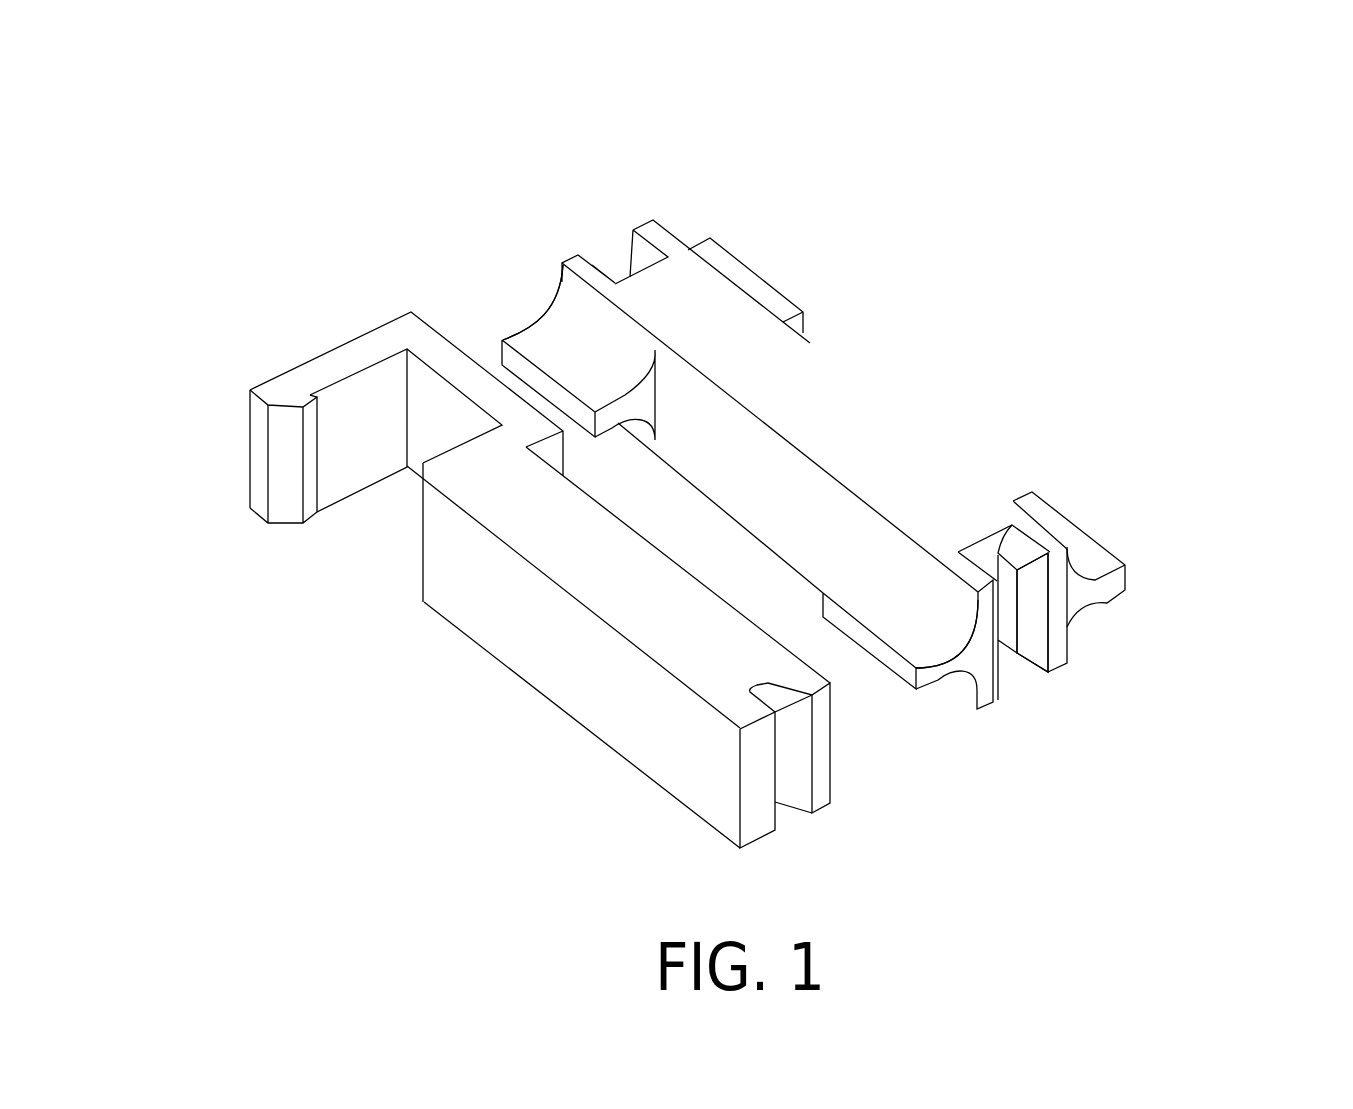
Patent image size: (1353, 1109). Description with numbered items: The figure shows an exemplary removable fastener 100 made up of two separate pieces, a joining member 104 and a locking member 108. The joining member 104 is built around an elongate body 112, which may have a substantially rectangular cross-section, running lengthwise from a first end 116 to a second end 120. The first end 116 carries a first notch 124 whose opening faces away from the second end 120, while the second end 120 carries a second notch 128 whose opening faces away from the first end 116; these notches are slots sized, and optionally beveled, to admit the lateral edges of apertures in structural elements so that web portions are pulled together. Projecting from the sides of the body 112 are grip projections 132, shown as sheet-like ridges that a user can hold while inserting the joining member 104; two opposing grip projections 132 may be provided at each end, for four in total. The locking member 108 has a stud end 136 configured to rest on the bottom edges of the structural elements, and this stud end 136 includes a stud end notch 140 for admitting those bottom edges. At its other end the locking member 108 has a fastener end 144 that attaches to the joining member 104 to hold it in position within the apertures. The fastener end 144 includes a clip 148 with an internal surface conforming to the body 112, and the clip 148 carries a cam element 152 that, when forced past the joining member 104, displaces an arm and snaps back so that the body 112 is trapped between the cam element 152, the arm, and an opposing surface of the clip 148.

The removable fastener 100 is at (358, 143).
The joining member 104 is at (800, 390).
The locking member 108 is at (540, 660).
The elongate body 112 is at (848, 412).
The first end 116 is at (563, 265).
The second end 120 is at (1075, 604).
The first notch 124 is at (615, 262).
The second notch 128 is at (1017, 623).
The grip projection 132 is at (560, 335).
The stud end 136 is at (763, 772).
The stud end notch 140 is at (792, 758).
The fastener end 144 is at (355, 355).
The clip 148 is at (328, 368).
The cam element 152 is at (288, 437).